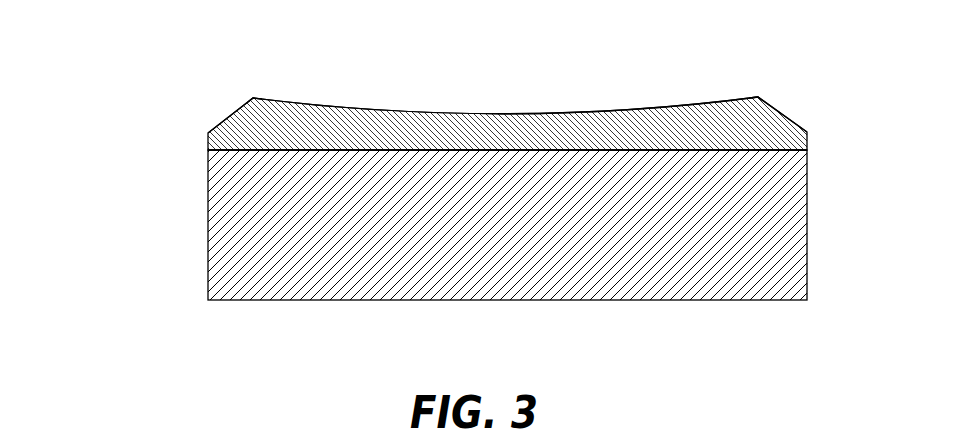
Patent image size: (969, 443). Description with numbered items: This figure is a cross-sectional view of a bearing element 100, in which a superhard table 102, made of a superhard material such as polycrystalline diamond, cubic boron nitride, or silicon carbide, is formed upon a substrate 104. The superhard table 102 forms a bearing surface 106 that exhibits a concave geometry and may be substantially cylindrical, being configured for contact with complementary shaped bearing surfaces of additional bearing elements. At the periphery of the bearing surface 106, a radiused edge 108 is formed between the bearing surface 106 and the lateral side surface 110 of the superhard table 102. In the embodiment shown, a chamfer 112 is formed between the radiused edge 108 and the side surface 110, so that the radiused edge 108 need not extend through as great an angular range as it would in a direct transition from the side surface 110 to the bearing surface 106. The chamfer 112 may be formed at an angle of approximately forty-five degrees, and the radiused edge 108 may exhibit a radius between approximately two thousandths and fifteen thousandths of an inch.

The bearing element 100 is at (160, 241).
The superhard table 102 is at (195, 113).
The substrate 104 is at (243, 312).
The bearing surface 106 is at (400, 112).
The radiused edge 108 is at (253, 97).
The side surface 110 is at (207, 137).
The chamfer 112 is at (236, 108).